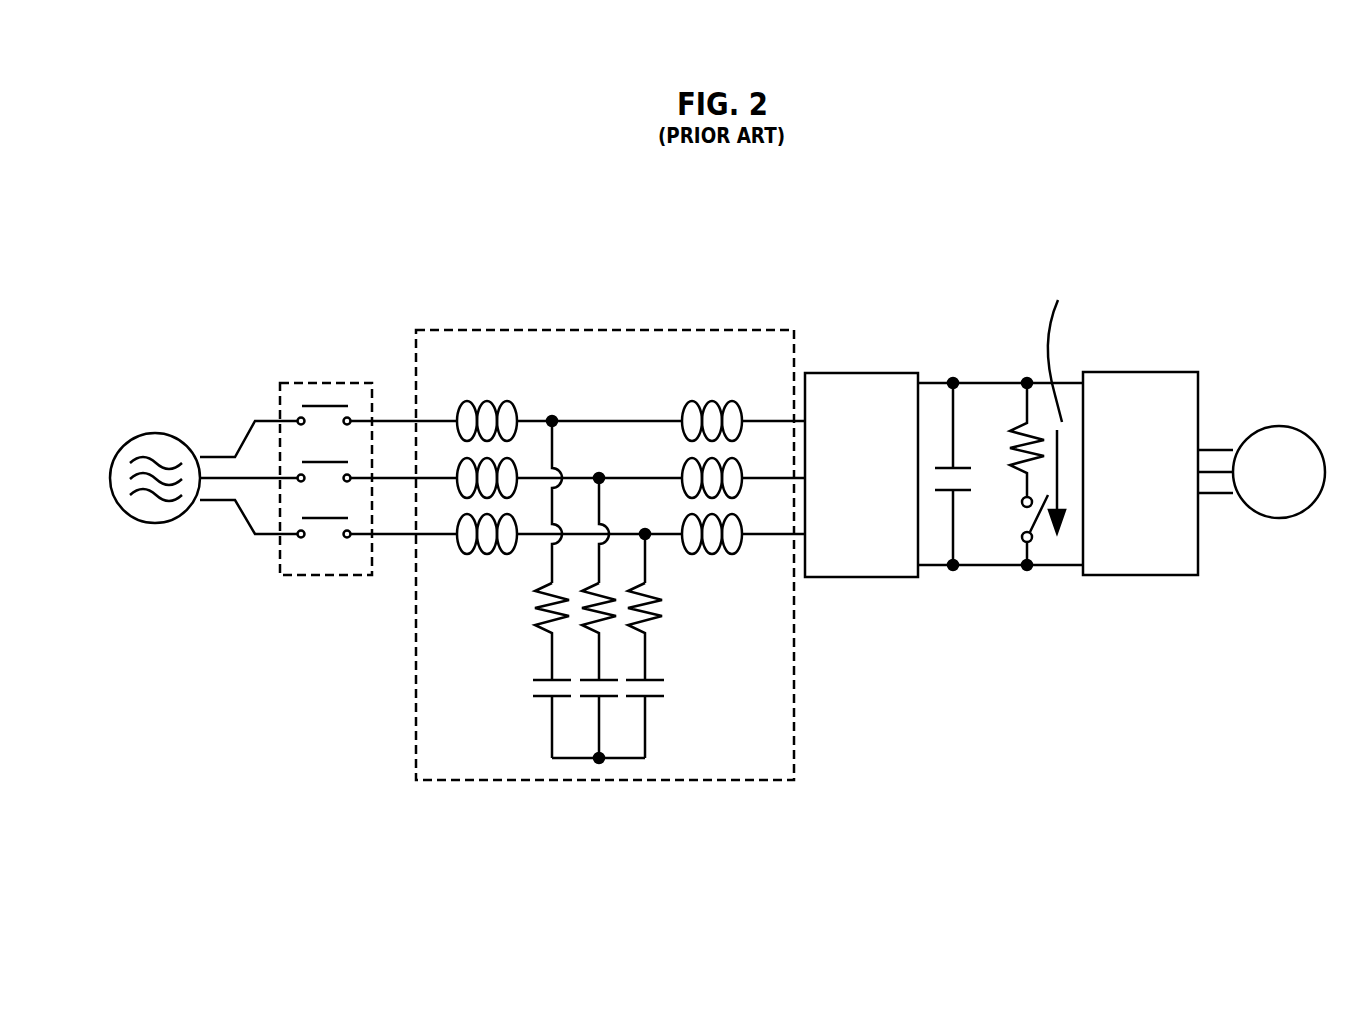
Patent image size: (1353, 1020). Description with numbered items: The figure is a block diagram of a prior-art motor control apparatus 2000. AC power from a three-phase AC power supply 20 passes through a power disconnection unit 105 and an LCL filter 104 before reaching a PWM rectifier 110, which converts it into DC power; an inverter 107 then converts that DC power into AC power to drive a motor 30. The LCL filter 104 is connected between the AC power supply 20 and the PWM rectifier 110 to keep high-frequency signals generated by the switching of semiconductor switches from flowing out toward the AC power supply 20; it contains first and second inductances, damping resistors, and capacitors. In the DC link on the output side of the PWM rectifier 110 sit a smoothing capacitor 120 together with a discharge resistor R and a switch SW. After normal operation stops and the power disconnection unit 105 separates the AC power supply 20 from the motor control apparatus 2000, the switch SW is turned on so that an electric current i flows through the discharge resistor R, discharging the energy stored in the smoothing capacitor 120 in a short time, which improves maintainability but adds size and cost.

The motor control apparatus 2000 is at (718, 248).
The AC power supply 20 is at (155, 523).
The power disconnection unit 105 is at (280, 575).
The LCL filter 104 is at (718, 329).
The PWM rectifier 110 is at (826, 373).
The smoothing capacitor 120 is at (963, 470).
The inverter 107 is at (1140, 372).
The motor 30 is at (1298, 428).